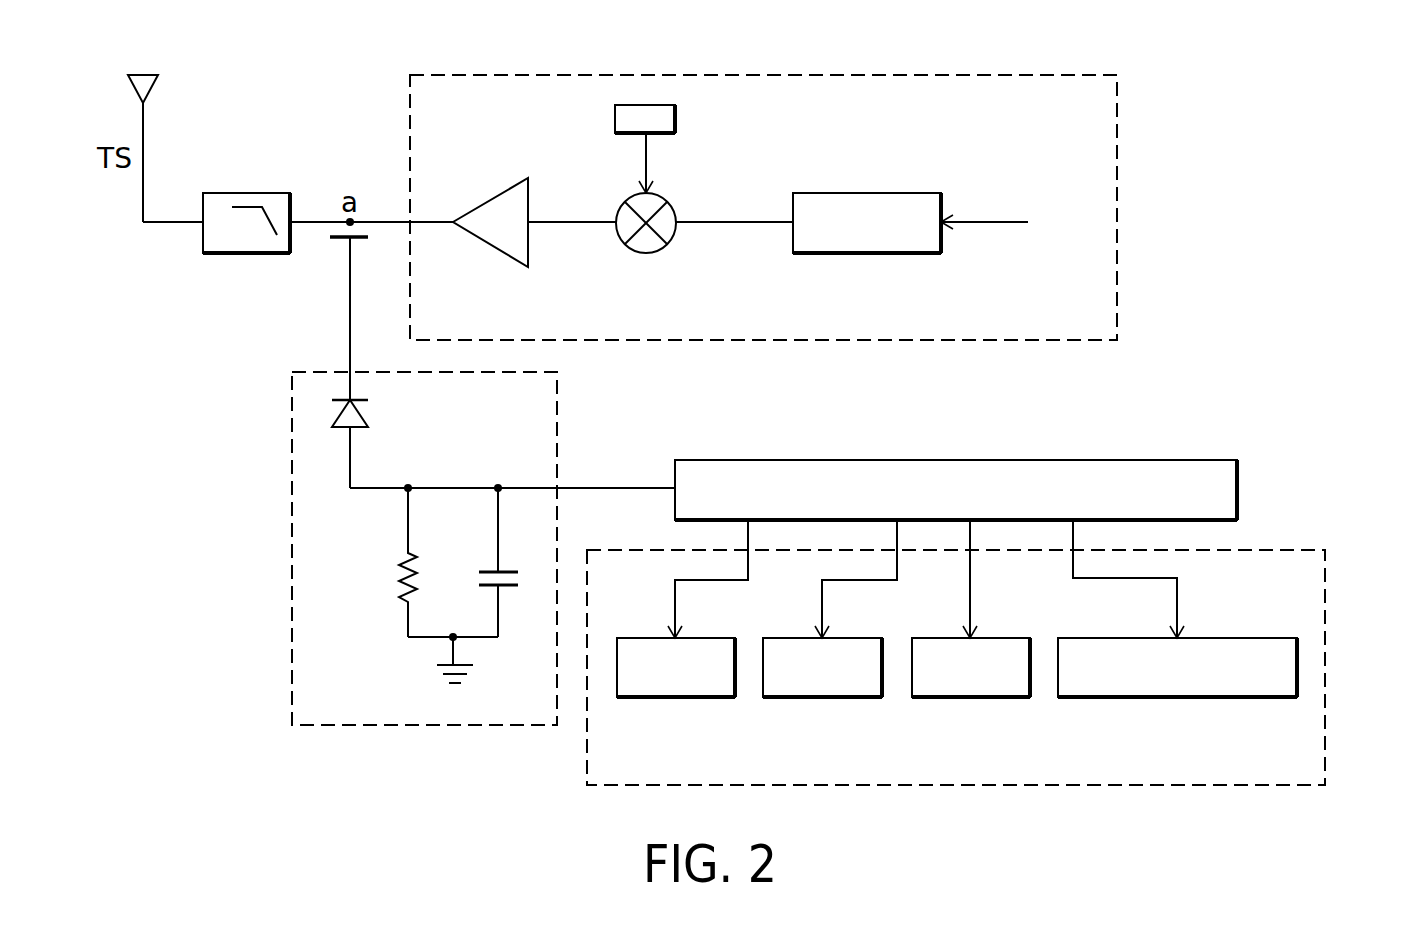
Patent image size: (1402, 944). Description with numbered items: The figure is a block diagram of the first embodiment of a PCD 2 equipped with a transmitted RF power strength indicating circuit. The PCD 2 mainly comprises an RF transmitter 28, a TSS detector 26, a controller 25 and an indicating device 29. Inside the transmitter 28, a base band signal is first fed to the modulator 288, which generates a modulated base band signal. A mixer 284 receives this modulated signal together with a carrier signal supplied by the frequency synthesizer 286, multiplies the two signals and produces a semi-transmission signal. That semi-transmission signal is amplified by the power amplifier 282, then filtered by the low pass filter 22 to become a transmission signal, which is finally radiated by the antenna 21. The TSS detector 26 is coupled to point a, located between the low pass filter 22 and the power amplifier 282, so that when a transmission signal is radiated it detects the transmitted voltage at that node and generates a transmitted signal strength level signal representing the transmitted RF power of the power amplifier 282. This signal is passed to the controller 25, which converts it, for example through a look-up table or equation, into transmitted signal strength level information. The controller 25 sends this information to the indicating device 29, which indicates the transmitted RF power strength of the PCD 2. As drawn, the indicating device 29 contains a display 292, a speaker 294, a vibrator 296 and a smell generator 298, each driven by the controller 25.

The PCD 2 is at (228, 312).
The antenna 21 is at (128, 90).
The low pass filter 22 is at (245, 193).
The controller 25 is at (1237, 490).
The TSS detector 26 is at (557, 398).
The transmitter 28 is at (1117, 208).
The power amplifier 282 is at (490, 250).
The mixer 284 is at (646, 253).
The frequency synthesizer 286 is at (675, 118).
The modulator 288 is at (865, 193).
The indicating device 29 is at (1325, 665).
The display 292 is at (675, 697).
The speaker 294 is at (822, 697).
The vibrator 296 is at (970, 697).
The smell generator 298 is at (1177, 697).